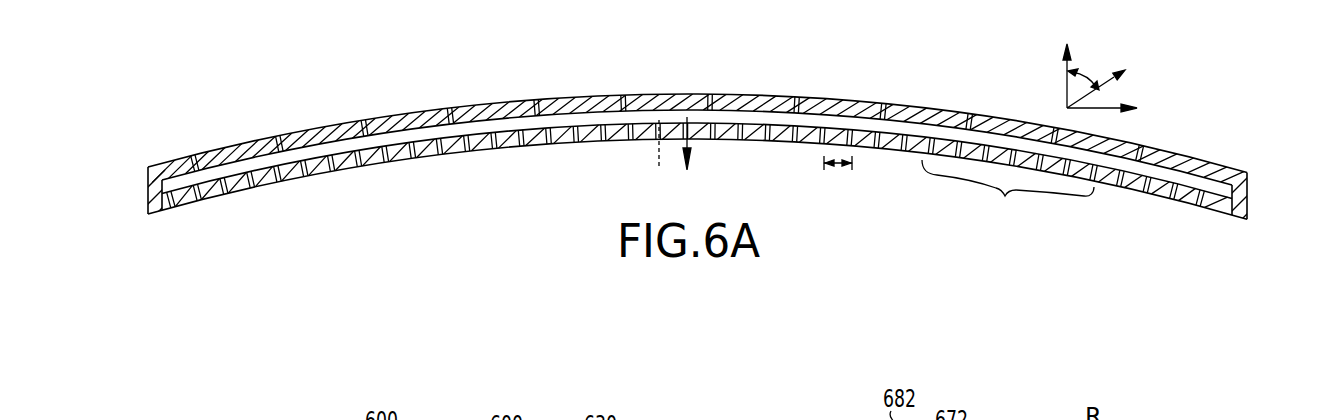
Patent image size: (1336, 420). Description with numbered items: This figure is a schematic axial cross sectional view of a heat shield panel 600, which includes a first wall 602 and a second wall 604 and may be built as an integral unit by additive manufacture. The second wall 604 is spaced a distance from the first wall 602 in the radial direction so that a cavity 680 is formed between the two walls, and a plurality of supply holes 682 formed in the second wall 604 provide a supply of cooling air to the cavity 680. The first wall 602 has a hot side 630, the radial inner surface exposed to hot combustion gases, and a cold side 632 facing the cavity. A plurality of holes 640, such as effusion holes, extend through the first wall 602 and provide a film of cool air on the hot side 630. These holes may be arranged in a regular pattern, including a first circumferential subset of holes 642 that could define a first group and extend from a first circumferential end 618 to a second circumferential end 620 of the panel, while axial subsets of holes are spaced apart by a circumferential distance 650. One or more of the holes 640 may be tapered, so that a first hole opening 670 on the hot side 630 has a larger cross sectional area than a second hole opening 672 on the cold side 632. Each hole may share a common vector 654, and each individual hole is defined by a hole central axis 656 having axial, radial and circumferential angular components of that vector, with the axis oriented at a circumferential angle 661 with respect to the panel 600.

The heat shield panel 600 is at (379, 108).
The first wall 602 is at (265, 184).
The second wall 604 is at (236, 143).
The first circumferential end 618 is at (147, 203).
The second circumferential end 620 is at (1249, 178).
The hot side 630 is at (509, 146).
The cold side 632 is at (539, 128).
The plurality of holes 640 is at (769, 125).
The first circumferential subset of holes 642 is at (1008, 196).
The circumferential distance 650 is at (840, 172).
The common vector 654 is at (693, 125).
The hole central axis 656 is at (655, 148).
The circumferential angle 661 is at (1088, 75).
The first hole opening 670 is at (1199, 212).
The second hole opening 672 is at (1201, 184).
The cavity 680 is at (426, 128).
The supply holes 682 is at (886, 112).